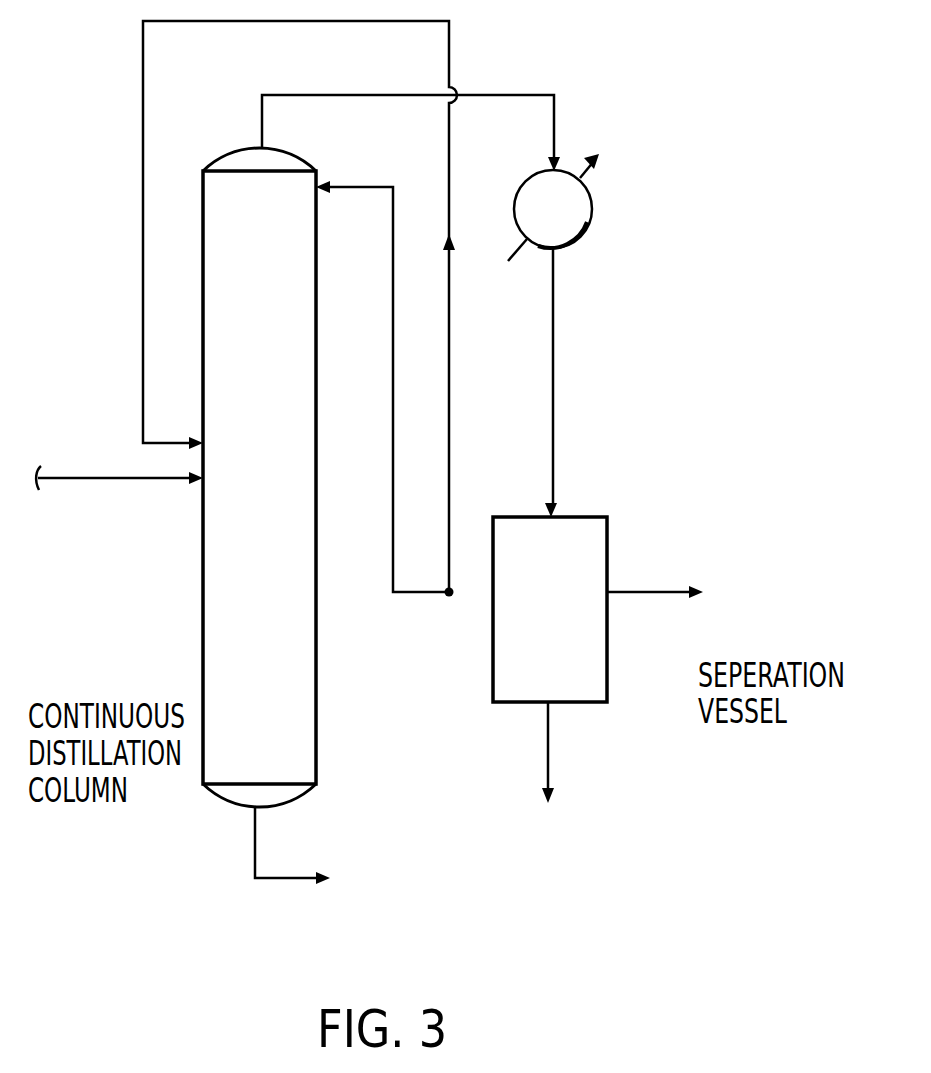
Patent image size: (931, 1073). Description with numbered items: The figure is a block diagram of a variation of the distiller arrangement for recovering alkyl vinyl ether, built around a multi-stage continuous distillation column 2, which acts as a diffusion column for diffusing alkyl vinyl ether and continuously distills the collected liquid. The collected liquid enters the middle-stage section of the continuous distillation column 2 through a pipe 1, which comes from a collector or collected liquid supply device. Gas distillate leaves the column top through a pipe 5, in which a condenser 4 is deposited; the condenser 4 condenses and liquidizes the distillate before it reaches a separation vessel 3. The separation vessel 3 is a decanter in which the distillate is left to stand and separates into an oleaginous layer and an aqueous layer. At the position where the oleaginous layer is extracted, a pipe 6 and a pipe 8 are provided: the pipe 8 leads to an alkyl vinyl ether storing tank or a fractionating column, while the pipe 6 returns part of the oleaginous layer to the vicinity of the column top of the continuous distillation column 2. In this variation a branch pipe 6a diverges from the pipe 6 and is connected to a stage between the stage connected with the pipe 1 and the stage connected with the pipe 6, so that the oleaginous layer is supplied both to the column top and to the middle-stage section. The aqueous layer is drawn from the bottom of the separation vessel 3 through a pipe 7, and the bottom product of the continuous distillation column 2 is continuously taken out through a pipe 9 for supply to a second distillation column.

The pipe 1 is at (86, 478).
The continuous distillation column 2 is at (197, 648).
The separation vessel 3 is at (607, 565).
The condenser 4 is at (594, 217).
The pipe 5 is at (500, 95).
The pipe 6 is at (392, 445).
The branch pipe 6a is at (449, 437).
The pipe 7 is at (548, 724).
The pipe 8 is at (670, 600).
The pipe 9 is at (283, 877).